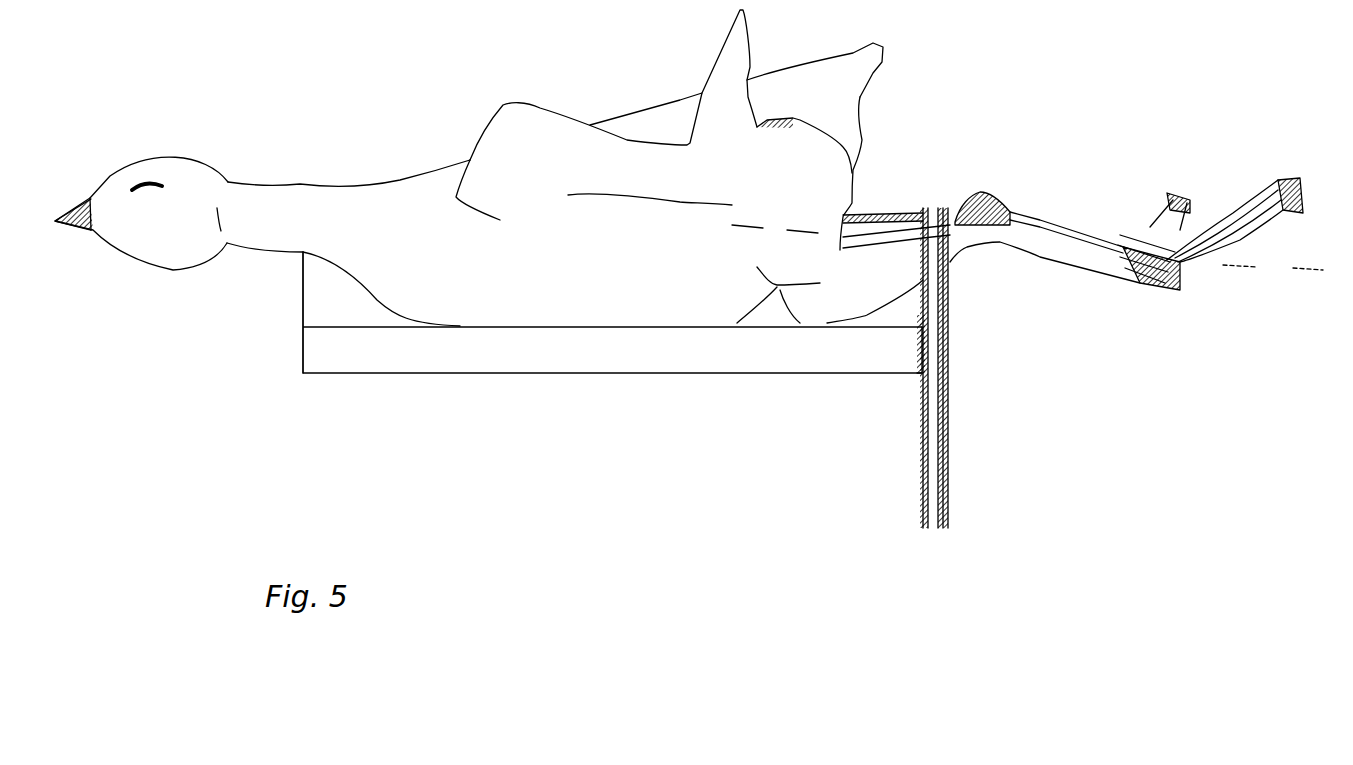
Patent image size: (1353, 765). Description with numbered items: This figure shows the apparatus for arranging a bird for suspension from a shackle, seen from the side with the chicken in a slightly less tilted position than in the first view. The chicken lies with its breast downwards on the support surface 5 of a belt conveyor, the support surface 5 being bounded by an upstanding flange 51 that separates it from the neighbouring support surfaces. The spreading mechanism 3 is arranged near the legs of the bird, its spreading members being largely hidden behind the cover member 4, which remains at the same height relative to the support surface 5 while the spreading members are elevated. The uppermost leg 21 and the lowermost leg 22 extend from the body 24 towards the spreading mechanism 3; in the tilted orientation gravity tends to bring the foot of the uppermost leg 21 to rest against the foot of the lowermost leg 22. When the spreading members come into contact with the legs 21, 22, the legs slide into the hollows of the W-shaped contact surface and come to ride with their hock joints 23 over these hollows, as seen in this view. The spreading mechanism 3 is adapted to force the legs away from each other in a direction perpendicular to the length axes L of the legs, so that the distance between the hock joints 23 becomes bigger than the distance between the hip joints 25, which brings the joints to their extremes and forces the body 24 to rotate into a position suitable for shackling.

The spreading mechanism 3 is at (922, 383).
The cover member 4 is at (947, 385).
The support surface 5 is at (703, 358).
The upstanding flange 51 is at (317, 293).
The uppermost leg 21 is at (1053, 222).
The lowermost leg 22 is at (1057, 247).
The hock joint 23 is at (980, 190).
The body 24 is at (615, 283).
The hip joint 25 is at (778, 177).
The length axis of the leg L is at (1283, 278).